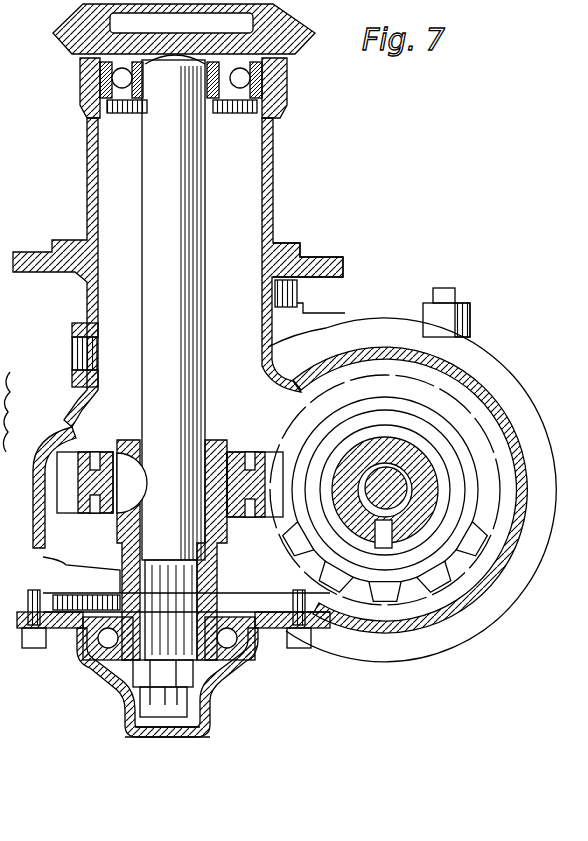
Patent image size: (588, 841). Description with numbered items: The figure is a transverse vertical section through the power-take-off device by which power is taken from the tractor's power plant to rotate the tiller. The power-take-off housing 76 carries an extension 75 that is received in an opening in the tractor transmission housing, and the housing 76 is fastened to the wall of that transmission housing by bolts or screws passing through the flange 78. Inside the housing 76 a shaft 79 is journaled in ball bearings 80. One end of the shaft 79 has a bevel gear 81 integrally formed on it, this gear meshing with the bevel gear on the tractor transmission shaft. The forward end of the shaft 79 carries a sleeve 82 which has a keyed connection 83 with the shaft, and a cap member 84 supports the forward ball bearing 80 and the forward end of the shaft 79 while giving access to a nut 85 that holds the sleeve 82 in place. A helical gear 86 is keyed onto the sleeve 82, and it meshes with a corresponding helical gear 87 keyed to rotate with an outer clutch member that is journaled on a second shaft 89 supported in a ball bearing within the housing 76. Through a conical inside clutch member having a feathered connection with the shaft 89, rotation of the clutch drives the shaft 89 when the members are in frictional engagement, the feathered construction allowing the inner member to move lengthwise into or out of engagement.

The extension 75 is at (284, 167).
The power-take-off housing 76 is at (332, 318).
The flange 78 is at (332, 256).
The shaft 79 is at (153, 242).
The ball bearings 80 is at (105, 88).
The bevel gear 81 is at (65, 25).
The sleeve 82 is at (133, 573).
The keyed connection 83 is at (173, 641).
The cap member 84 is at (200, 727).
The nut 85 is at (113, 690).
The helical gear 86 is at (63, 500).
The helical gear 87 is at (475, 553).
The shaft 89 is at (374, 478).